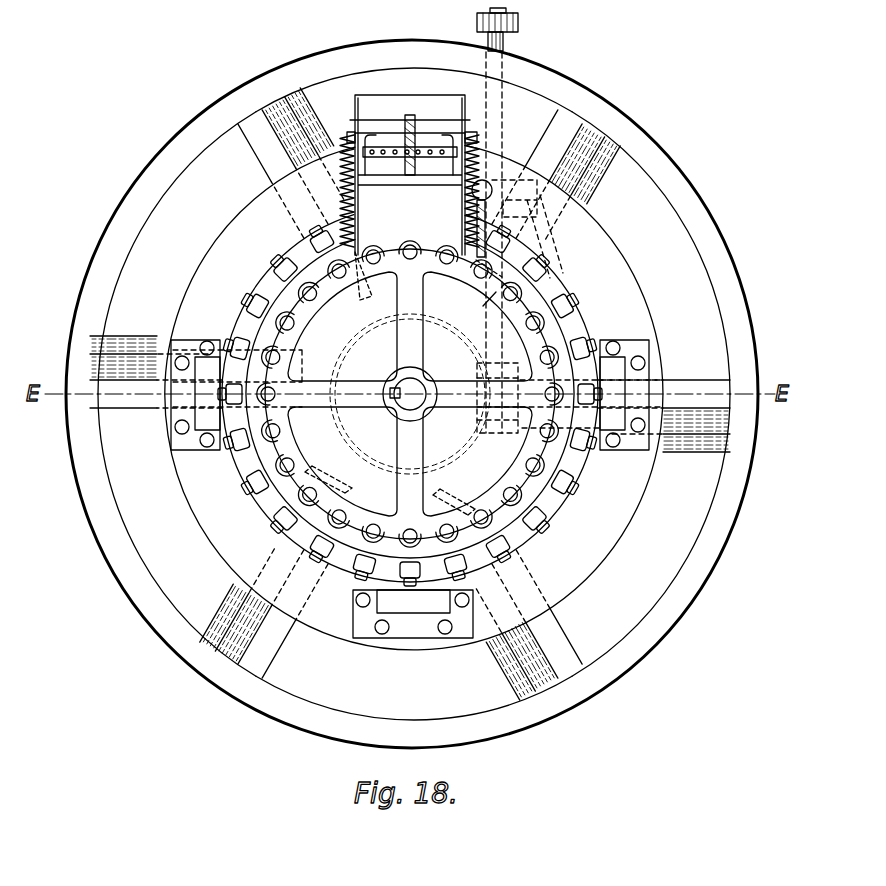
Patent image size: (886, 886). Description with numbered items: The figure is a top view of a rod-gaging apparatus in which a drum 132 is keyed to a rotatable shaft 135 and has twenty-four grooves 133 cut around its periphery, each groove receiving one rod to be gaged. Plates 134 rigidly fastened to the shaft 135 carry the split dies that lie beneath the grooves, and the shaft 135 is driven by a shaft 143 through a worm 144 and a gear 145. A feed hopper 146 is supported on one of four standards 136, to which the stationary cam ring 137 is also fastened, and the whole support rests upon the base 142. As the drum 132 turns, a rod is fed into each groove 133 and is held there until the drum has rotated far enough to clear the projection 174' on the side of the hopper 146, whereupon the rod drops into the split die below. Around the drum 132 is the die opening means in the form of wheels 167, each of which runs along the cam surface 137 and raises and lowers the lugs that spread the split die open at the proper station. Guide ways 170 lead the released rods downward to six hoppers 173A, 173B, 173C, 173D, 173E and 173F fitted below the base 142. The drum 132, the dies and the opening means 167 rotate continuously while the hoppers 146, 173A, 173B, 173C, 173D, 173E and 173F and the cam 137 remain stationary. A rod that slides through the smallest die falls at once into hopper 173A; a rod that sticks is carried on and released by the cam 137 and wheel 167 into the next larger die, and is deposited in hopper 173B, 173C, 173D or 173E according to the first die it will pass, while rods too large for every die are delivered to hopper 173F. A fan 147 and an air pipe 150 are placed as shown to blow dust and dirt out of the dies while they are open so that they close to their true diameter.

The drum 132 is at (519, 465).
The grooves 133 is at (293, 321).
The plates 134 is at (535, 499).
The shaft 135 is at (403, 407).
The standards 136 is at (190, 446).
The cam ring 137 is at (576, 318).
The base 142 is at (565, 595).
The shaft 143 is at (518, 33).
The worm 144 is at (410, 384).
The gear 145 is at (410, 399).
The hopper 146 is at (380, 102).
The fan 147 is at (575, 180).
The air pipe 150 is at (418, 242).
The wheel 167 is at (246, 292).
The guide ways 170 is at (219, 617).
The hopper 173A is at (651, 253).
The hopper 173B is at (651, 535).
The hopper 173C is at (414, 698).
The hopper 173D is at (177, 535).
The hopper 173E is at (177, 253).
The hopper 173F is at (414, 90).
The projection 174' is at (409, 191).